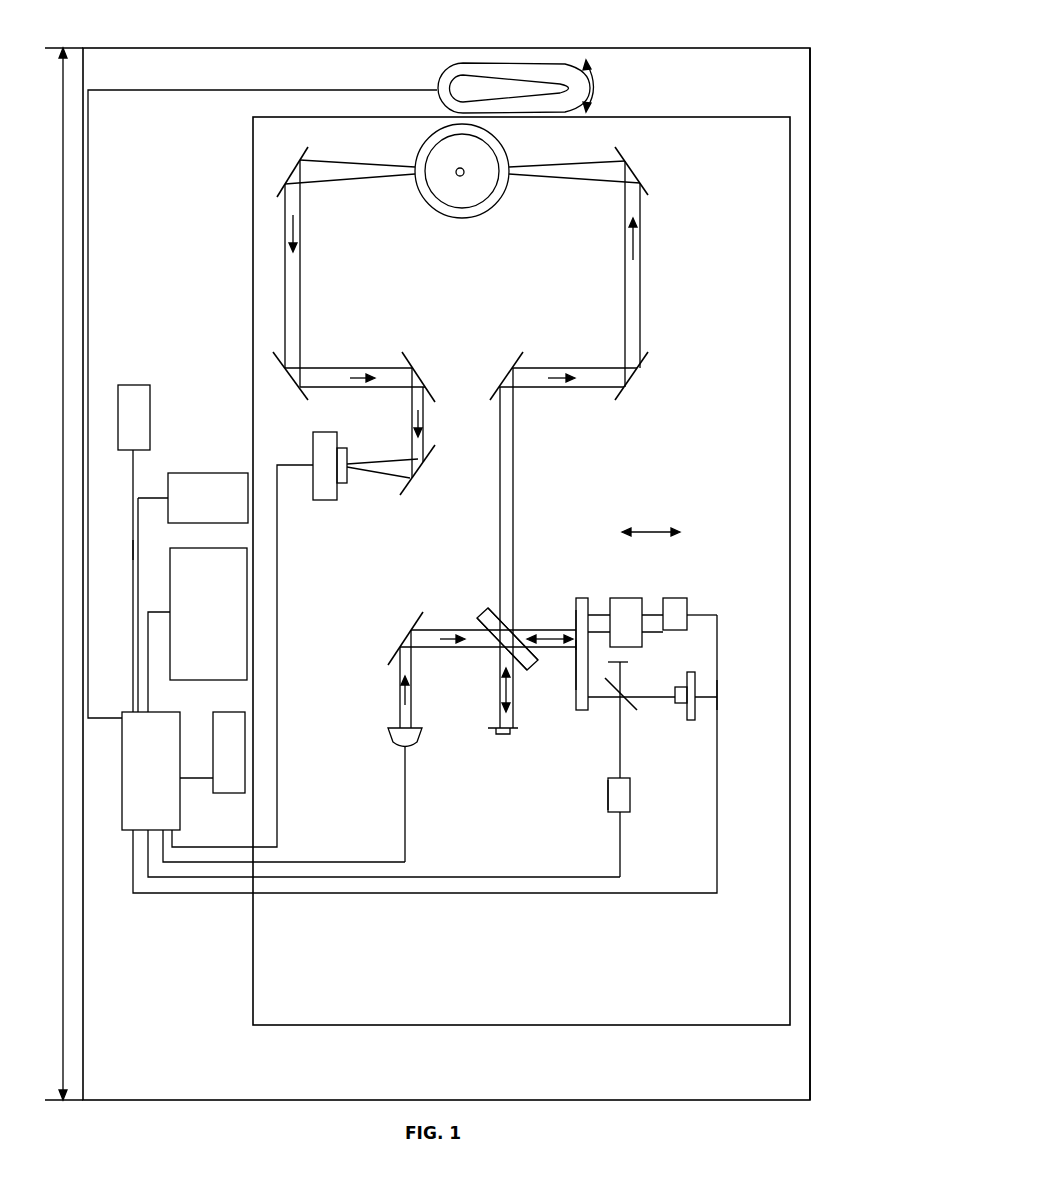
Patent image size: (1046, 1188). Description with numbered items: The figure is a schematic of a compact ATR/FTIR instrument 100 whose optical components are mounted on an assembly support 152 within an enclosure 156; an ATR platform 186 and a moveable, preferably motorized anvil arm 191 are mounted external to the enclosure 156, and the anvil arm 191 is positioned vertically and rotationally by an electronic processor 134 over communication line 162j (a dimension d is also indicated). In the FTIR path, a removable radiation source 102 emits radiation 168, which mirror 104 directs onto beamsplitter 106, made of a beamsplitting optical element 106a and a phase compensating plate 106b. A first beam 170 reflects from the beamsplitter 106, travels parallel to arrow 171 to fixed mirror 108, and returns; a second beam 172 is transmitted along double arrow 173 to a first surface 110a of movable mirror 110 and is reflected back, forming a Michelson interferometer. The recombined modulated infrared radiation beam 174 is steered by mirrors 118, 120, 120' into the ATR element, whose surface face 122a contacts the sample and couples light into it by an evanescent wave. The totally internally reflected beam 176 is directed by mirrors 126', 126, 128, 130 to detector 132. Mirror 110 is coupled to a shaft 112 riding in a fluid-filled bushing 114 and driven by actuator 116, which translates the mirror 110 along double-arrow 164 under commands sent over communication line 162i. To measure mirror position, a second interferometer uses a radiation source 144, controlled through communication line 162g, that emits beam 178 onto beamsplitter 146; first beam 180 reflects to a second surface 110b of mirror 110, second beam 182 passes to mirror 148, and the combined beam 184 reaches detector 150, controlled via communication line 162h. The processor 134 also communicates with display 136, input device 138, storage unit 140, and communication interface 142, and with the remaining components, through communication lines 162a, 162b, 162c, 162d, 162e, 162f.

The instrument 100 is at (666, 42).
The distance d is at (64, 574).
The radiation source 102 is at (398, 741).
The mirror 104 is at (392, 652).
The beamsplitter 106 is at (531, 668).
The beamsplitting optical element 106a is at (486, 610).
The phase compensating plate 106b is at (471, 621).
The fixed mirror 108 is at (493, 735).
The movable mirror 110 is at (577, 612).
The first surface 110a is at (576, 664).
The second surface 110b is at (576, 645).
The shaft 112 is at (607, 617).
The bushing 114 is at (622, 598).
The actuator 116 is at (675, 598).
The mirror 118 is at (503, 377).
The mirror 120 is at (651, 376).
The mirror 120' is at (664, 259).
The surface face 122a is at (457, 176).
The mirror 126 is at (260, 370).
The mirror 126' is at (254, 259).
The mirror 128 is at (428, 375).
The mirror 130 is at (416, 467).
The detector 132 is at (325, 501).
The electronic processor 134 is at (151, 771).
The display 136 is at (208, 614).
The input device 138 is at (246, 748).
The storage unit 140 is at (208, 498).
The communication interface 142 is at (172, 388).
The radiation source 144 is at (608, 793).
The beamsplitter 146 is at (622, 722).
The mirror 148 is at (631, 662).
The detector 150 is at (700, 708).
The assembly support 152 is at (735, 408).
The enclosure 156 is at (800, 467).
The communication line 162a is at (279, 618).
The communication line 162b is at (180, 575).
The communication line 162c is at (132, 548).
The communication line 162d is at (150, 663).
The communication line 162e is at (181, 779).
The communication line 162f is at (312, 862).
The communication line 162g is at (437, 877).
The communication line 162h is at (718, 696).
The communication line 162i is at (719, 650).
The communication line 162j is at (178, 90).
The double-arrow 164 is at (665, 526).
The radiation 168 is at (482, 650).
The first beam 170 is at (500, 708).
The arrow 171 is at (498, 690).
The second beam 172 is at (519, 625).
The double arrow 173 is at (523, 632).
The modulated infrared radiation beam 174 is at (536, 162).
The reflected beam 176 is at (378, 160).
The radiation beam 178 is at (621, 769).
The first beam 180 is at (608, 700).
The second beam 182 is at (627, 691).
The combined beam 184 is at (656, 700).
The ATR platform 186 is at (474, 190).
The anvil arm 191 is at (514, 88).